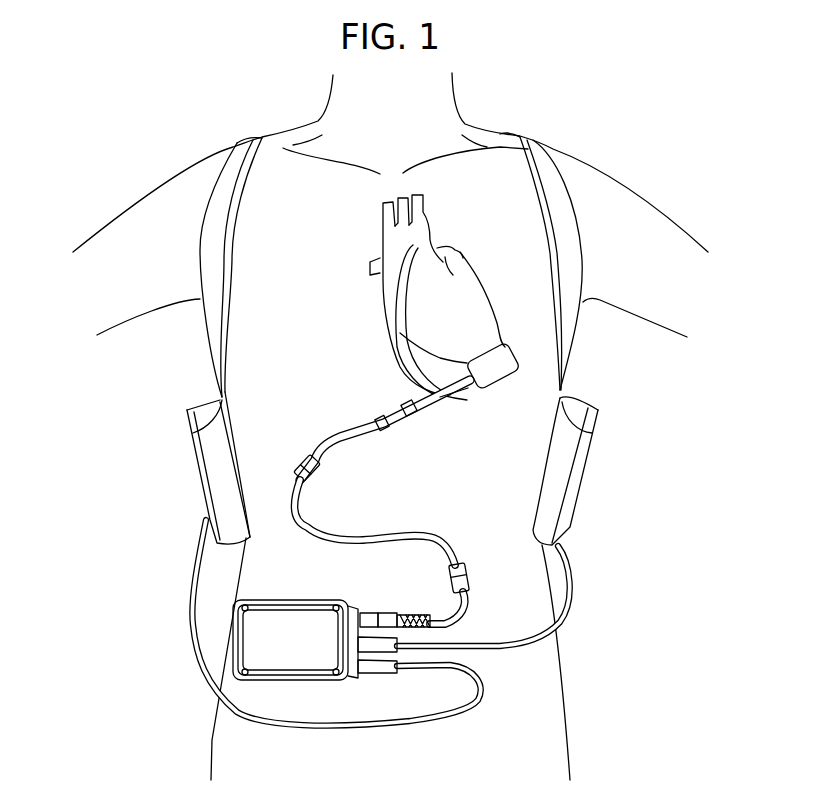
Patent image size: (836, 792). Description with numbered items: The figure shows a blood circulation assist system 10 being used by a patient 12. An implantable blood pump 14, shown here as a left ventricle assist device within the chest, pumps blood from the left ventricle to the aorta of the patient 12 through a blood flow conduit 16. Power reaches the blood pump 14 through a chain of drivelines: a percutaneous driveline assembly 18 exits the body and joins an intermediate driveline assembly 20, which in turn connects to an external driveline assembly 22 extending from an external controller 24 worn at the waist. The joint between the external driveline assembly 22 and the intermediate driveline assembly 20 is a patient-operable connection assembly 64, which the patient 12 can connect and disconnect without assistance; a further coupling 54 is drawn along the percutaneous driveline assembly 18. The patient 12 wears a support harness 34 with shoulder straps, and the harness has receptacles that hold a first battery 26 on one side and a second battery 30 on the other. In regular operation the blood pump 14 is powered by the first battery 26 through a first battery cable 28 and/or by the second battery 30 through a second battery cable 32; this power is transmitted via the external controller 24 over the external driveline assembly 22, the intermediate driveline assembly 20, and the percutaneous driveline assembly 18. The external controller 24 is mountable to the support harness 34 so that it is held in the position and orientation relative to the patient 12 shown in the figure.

The blood circulation assist system 10 is at (412, 382).
The patient 12 is at (623, 187).
The implantable blood pump 14 is at (515, 355).
The blood flow conduit 16 is at (393, 293).
The percutaneous driveline assembly 18 is at (345, 410).
The intermediate driveline assembly 20 is at (393, 523).
The external driveline assembly 22 is at (398, 600).
The external controller 24 is at (283, 680).
The first battery 26 is at (598, 418).
The first battery cable 28 is at (574, 587).
The second battery 30 is at (187, 420).
The second battery cable 32 is at (195, 653).
The support harness 34 is at (242, 140).
The driveline joint 54 is at (412, 417).
The patient-operable connection assembly 64 is at (472, 565).